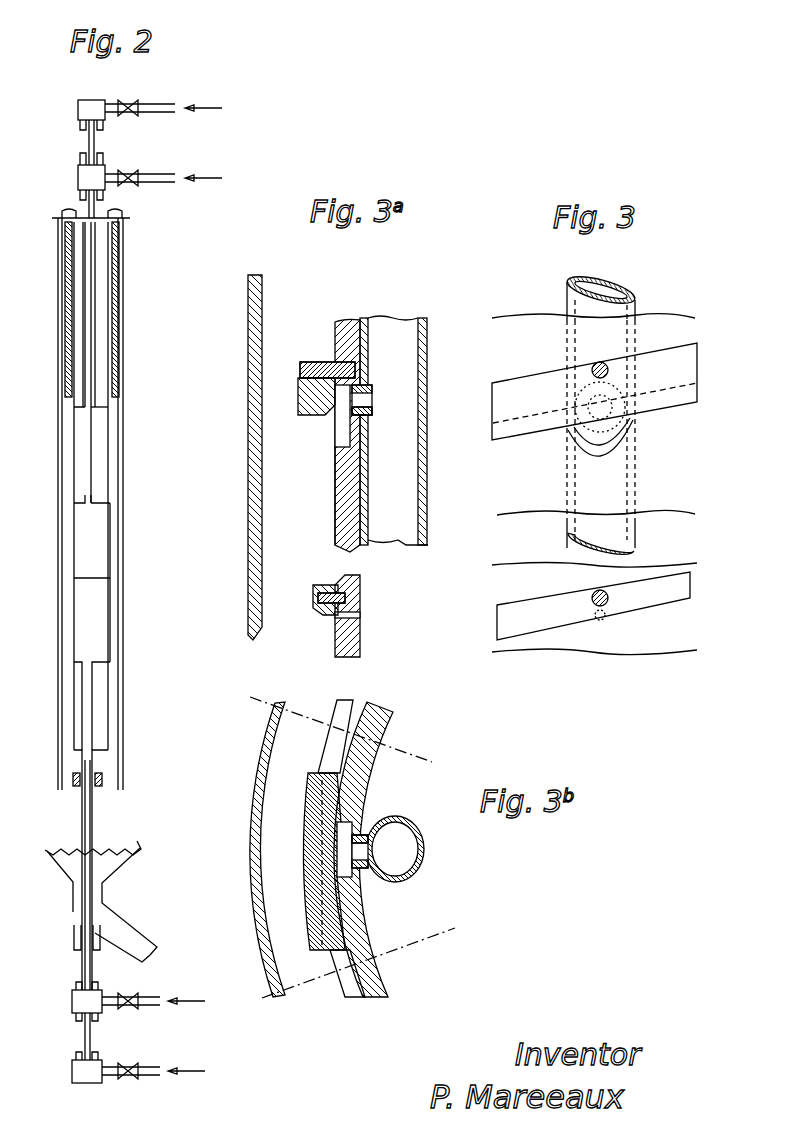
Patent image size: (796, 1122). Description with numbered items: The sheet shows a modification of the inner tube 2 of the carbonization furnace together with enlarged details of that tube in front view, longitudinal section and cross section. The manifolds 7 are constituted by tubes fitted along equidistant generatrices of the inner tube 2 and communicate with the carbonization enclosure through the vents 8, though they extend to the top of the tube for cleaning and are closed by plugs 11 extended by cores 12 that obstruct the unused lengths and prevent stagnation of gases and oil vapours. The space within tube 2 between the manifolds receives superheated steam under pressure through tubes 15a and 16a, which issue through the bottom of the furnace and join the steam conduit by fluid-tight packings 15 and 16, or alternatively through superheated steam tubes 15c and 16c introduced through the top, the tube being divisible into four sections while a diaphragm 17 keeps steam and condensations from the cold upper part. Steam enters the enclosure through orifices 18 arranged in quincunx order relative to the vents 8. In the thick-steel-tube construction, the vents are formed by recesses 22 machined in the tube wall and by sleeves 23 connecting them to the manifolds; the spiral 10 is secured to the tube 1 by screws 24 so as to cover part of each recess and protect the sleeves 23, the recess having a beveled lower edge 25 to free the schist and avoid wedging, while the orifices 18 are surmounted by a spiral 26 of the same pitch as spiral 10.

In FIG. 3A, the tube 1 is at (257, 445).
In FIG. 3B, the tube 1 is at (264, 752).
In FIG. 2, the inner tube 2 is at (58, 545).
In FIG. 3A, the inner tube 2 is at (350, 320).
In FIG. 3B, the inner tube 2 is at (380, 713).
In FIG. 2, the manifolds 7 is at (73, 490).
In FIG. 3A, the manifolds 7 is at (415, 335).
In FIG. 3, the manifolds 7 is at (608, 290).
In FIG. 3B, the manifolds 7 is at (415, 830).
In FIG. 3A, the vents 8 is at (370, 400).
In FIG. 3B, the vents 8 is at (364, 853).
In FIG. 3, the spiral 10 is at (594, 391).
In FIG. 3B, the spiral 10 is at (326, 780).
In FIG. 2, the plugs 11 is at (68, 215).
In FIG. 2, the cores 12 is at (118, 297).
In FIG. 2, the fluid-tight packing 15 is at (122, 1001).
In FIG. 2, the tube 15a is at (82, 965).
In FIG. 2, the superheated steam tube 15c is at (97, 210).
In FIG. 2, the fluid-tight packing 16 is at (122, 1068).
In FIG. 2, the tube 16a is at (95, 1047).
In FIG. 2, the superheated steam tube 16c is at (97, 140).
In FIG. 2, the diaphragm 17 is at (100, 408).
In FIG. 3A, the orifices 18 is at (355, 614).
In FIG. 3, the orifices 18 is at (594, 609).
In FIG. 3A, the recesses 22 is at (345, 437).
In FIG. 3, the recesses 22 is at (608, 430).
In FIG. 3B, the recesses 22 is at (345, 830).
In FIG. 3A, the sleeves 23 is at (372, 412).
In FIG. 3B, the sleeves 23 is at (368, 840).
In FIG. 3A, the screws 24 is at (298, 368).
In FIG. 3A, the beveled lower edge 25 is at (345, 455).
In FIG. 3, the beveled lower edge 25 is at (602, 455).
In FIG. 3A, the spiral 26 is at (323, 586).
In FIG. 3, the spiral 26 is at (623, 484).
In FIG. 3B, the spiral 26 is at (355, 711).